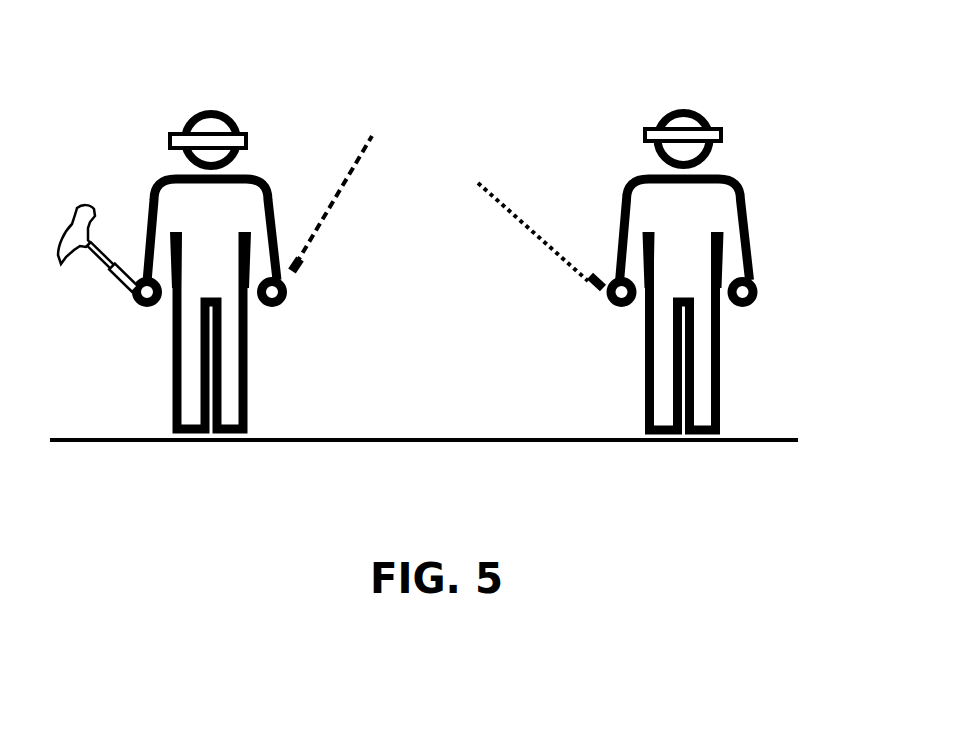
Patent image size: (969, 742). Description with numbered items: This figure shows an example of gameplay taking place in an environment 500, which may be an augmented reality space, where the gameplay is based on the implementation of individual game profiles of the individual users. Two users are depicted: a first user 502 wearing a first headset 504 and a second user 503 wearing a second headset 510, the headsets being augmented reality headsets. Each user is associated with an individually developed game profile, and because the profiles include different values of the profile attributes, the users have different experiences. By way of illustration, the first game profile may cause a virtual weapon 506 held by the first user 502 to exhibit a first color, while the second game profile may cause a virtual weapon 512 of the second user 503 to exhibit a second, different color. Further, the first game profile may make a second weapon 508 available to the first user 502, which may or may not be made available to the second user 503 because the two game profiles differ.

The environment 500 is at (453, 36).
The first user 502 is at (218, 76).
The second user 503 is at (704, 76).
The first headset 504 is at (251, 131).
The virtual weapon 506 is at (317, 237).
The second weapon 508 is at (57, 250).
The second headset 510 is at (642, 134).
The virtual weapon 512 is at (513, 215).